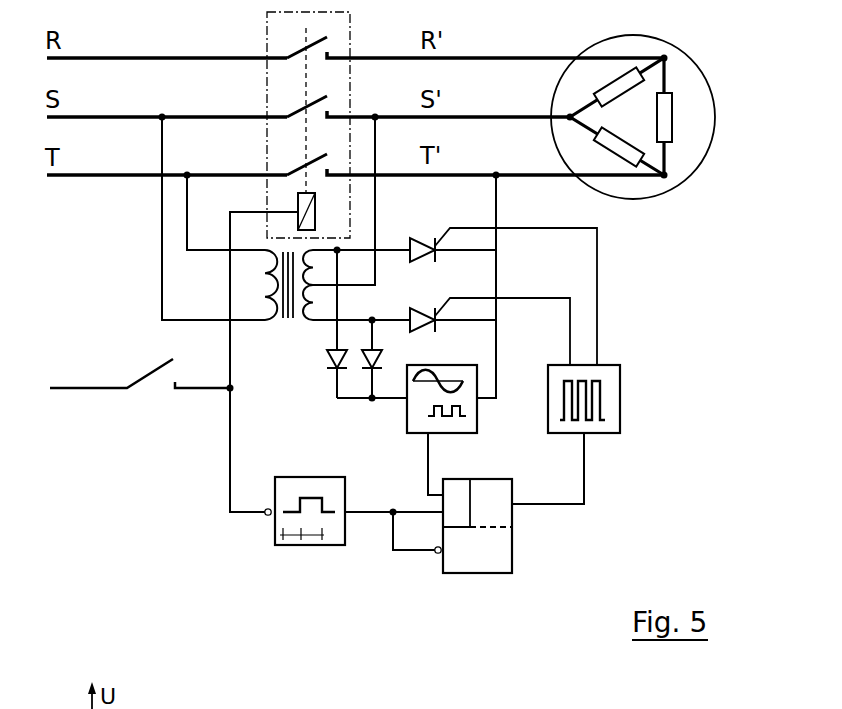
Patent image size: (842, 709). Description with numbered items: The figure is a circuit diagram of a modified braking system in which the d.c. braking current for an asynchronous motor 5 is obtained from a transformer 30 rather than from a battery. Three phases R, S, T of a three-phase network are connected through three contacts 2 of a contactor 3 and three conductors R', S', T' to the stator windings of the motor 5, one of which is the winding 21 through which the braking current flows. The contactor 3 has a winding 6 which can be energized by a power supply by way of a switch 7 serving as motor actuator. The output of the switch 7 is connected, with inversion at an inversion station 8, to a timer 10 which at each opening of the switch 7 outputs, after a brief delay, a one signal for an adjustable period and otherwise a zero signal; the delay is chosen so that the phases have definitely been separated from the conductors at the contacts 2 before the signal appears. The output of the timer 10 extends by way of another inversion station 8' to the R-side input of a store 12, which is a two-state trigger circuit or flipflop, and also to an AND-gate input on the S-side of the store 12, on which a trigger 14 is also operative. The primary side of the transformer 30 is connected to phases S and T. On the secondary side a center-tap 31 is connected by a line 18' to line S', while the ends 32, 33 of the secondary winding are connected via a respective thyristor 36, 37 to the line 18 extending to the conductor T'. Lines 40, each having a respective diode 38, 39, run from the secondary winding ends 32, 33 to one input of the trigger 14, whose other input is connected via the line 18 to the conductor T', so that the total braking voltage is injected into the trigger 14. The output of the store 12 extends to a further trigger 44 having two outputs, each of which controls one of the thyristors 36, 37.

The contacts 2 is at (306, 44).
The contactor 3 is at (350, 38).
The asynchronous motor 5 is at (690, 180).
The winding 6 is at (298, 207).
The switch 7 is at (140, 378).
The inversion station 8 is at (250, 468).
The inversion station 8' is at (422, 566).
The timer 10 is at (318, 546).
The store 12 is at (512, 528).
The trigger 14 is at (477, 408).
The line 18 is at (510, 286).
The line 18' is at (396, 220).
The winding 21 is at (612, 153).
The transformer 30 is at (285, 323).
The center-tap 31 is at (348, 287).
The end of the secondary winding 32 is at (393, 253).
The end of the secondary winding 33 is at (324, 322).
The thyristor 36 is at (424, 238).
The thyristor 37 is at (432, 332).
The diode 38 is at (328, 359).
The diode 39 is at (383, 360).
The lines 40 is at (384, 384).
The trigger 44 is at (548, 410).